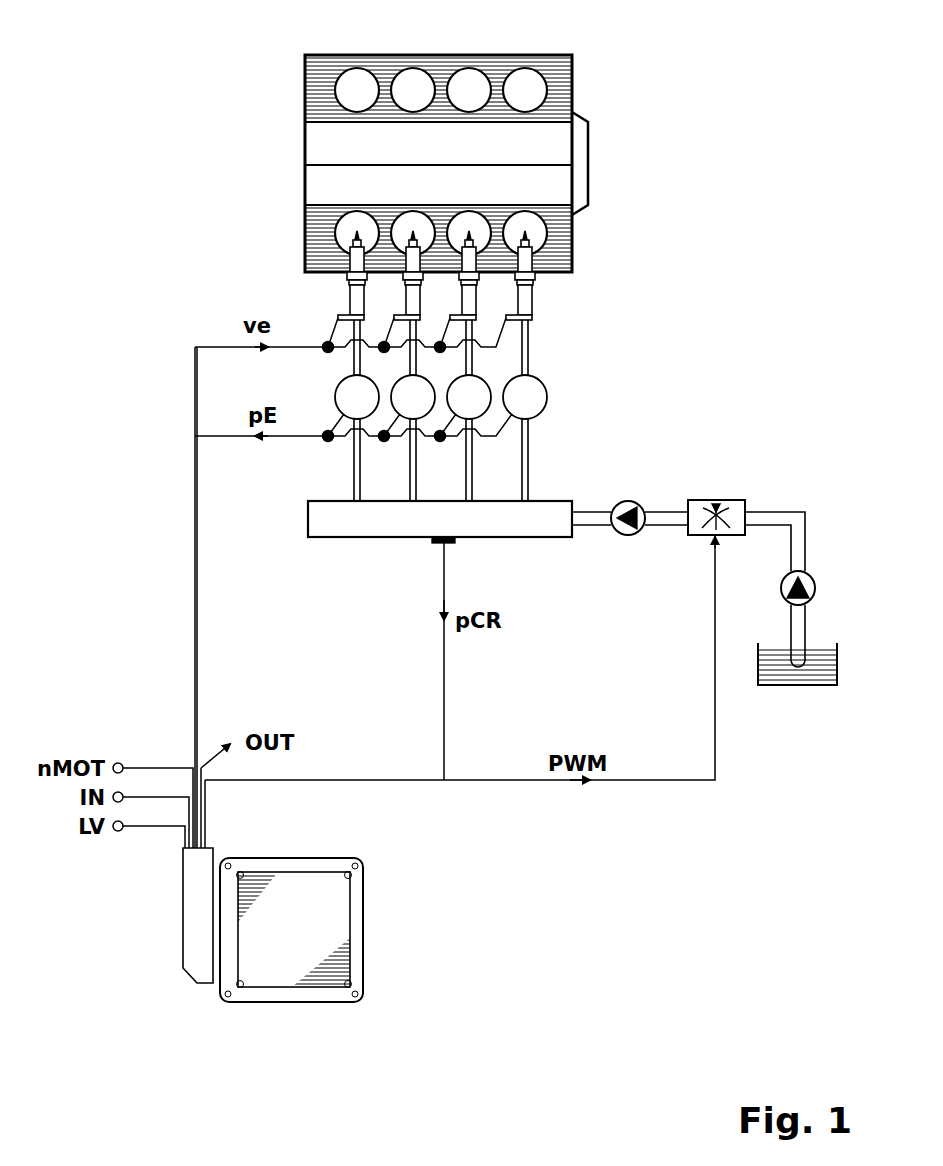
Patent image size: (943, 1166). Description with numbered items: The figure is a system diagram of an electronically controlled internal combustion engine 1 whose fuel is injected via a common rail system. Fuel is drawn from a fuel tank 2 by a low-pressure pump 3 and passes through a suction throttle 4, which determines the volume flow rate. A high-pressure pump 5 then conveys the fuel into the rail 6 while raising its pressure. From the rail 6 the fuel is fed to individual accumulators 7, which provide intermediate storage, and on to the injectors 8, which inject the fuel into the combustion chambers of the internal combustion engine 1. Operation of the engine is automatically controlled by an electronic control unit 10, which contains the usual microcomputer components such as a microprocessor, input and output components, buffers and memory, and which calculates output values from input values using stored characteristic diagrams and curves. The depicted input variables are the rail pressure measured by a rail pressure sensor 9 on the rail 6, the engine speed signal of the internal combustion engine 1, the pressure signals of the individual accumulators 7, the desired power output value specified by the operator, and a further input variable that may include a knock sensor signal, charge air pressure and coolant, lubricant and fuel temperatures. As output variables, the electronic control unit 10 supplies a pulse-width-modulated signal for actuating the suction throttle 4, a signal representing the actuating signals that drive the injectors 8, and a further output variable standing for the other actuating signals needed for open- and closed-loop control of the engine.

The internal combustion engine 1 is at (553, 65).
The fuel tank 2 is at (818, 655).
The low-pressure pump 3 is at (814, 587).
The suction throttle 4 is at (736, 502).
The high-pressure pump 5 is at (629, 502).
The rail 6 is at (523, 522).
The individual accumulators 7 is at (543, 398).
The injectors 8 is at (528, 297).
The rail pressure sensor 9 is at (430, 543).
The electronic control unit 10 is at (273, 925).